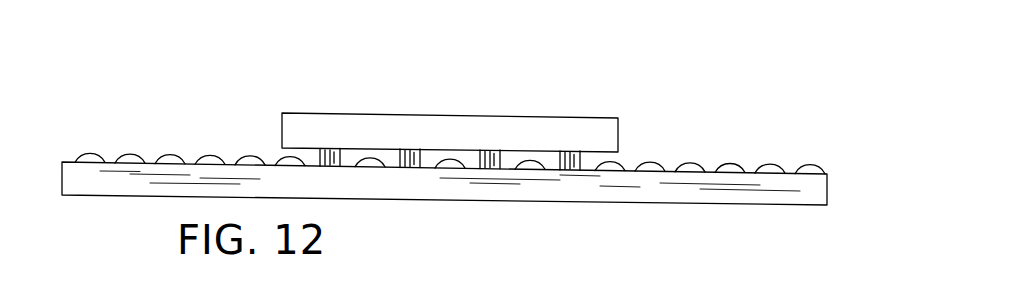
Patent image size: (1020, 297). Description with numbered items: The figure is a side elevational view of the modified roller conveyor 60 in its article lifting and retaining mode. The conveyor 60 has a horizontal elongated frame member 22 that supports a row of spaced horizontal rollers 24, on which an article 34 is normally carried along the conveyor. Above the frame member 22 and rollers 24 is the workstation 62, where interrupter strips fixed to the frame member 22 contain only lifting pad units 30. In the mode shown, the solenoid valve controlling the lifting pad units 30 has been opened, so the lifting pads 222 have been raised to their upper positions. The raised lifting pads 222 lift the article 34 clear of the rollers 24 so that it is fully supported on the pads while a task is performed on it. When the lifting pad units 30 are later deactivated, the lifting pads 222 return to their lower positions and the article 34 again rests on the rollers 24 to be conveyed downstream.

The frame member 22 is at (115, 187).
The roller 24 is at (162, 159).
The lifting pad unit 30 is at (571, 170).
The article 34 is at (605, 133).
The roller conveyor 60 is at (741, 143).
The workstation 62 is at (270, 146).
The lifting pad 222 is at (568, 164).